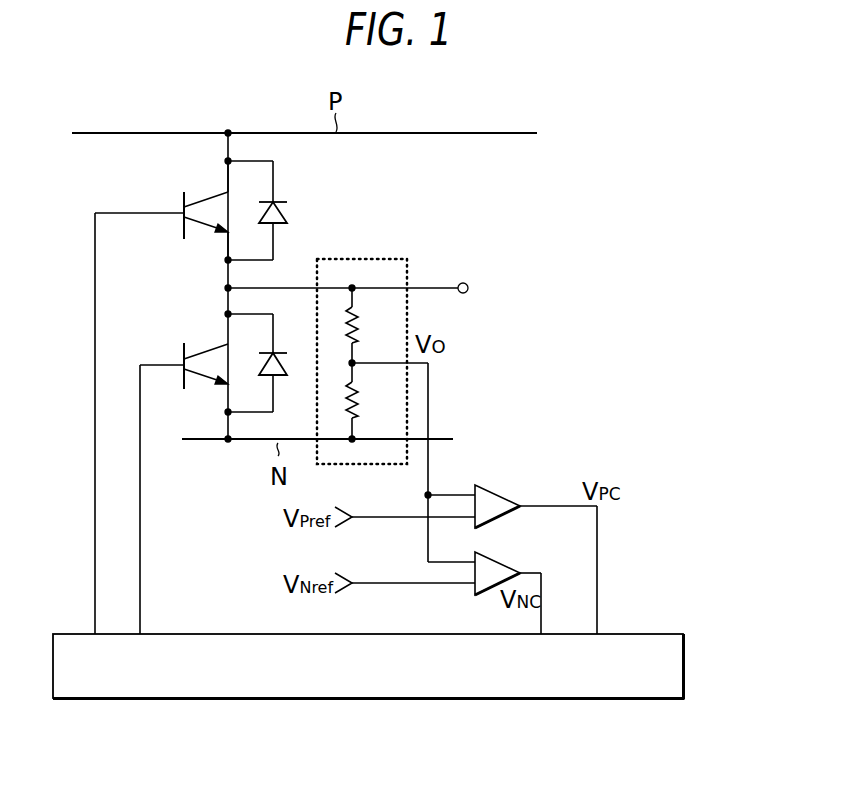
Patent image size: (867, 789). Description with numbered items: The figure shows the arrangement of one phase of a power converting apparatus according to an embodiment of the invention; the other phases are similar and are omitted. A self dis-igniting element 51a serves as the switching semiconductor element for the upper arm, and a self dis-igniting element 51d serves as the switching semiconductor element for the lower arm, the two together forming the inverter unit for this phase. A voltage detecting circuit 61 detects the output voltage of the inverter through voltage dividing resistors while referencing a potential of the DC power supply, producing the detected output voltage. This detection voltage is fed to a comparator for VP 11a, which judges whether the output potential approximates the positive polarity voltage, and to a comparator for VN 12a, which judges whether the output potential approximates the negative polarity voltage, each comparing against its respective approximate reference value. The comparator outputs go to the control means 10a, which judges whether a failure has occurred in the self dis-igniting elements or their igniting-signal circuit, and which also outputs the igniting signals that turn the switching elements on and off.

The self dis-igniting element for an upper arm 51a is at (183, 194).
The self dis-igniting element for a lower arm 51d is at (183, 346).
The voltage detecting circuit 61 is at (357, 258).
The comparator for VP 11a is at (498, 489).
The comparator for VN 12a is at (515, 561).
The control means 10a is at (685, 665).